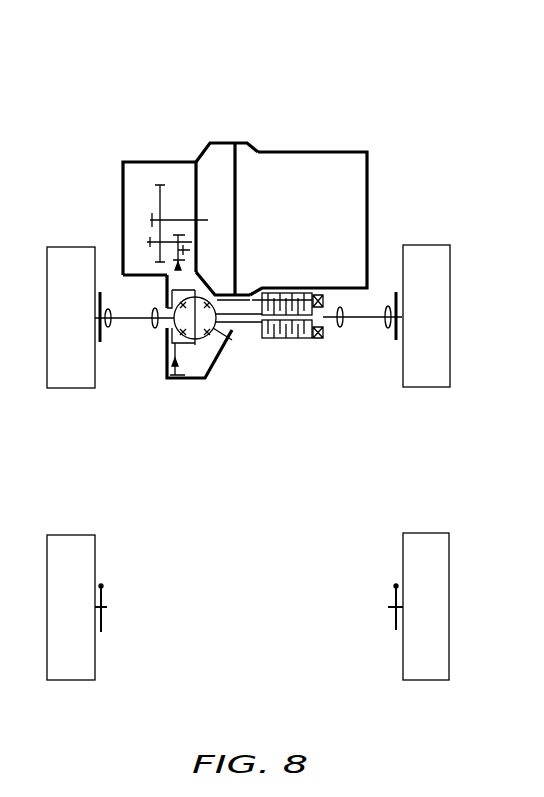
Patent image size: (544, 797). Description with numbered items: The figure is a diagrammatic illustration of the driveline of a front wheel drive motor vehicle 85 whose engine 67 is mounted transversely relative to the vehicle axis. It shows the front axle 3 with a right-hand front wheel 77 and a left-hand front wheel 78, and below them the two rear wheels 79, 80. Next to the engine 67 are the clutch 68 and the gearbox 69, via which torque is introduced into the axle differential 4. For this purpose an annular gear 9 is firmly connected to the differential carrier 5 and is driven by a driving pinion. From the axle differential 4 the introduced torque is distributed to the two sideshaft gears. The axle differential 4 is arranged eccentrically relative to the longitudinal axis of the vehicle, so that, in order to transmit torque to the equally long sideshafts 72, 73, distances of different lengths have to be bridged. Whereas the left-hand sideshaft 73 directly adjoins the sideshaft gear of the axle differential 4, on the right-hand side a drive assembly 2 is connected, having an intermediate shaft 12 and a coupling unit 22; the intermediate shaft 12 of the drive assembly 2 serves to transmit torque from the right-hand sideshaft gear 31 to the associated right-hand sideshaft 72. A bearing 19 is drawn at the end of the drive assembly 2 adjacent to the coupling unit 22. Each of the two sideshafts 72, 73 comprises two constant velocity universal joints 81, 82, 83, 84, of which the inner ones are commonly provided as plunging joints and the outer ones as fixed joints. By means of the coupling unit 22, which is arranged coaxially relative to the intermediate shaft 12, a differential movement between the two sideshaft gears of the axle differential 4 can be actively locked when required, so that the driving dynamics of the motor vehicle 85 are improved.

The drive assembly 2 is at (308, 329).
The front axle 3 is at (463, 305).
The axle differential 4 is at (197, 370).
The differential carrier 5 is at (210, 367).
The annular gear 9 is at (172, 380).
The intermediate shaft 12 is at (253, 293).
The bearing 19 is at (330, 280).
The coupling unit 22 is at (292, 288).
The right-hand sideshaft gear 31 is at (227, 337).
The engine 67 is at (307, 157).
The clutch 68 is at (215, 143).
The gearbox 69 is at (147, 177).
The right-hand sideshaft 72 is at (362, 320).
The left-hand sideshaft 73 is at (128, 330).
The right-hand front wheel 77 is at (433, 258).
The left-hand front wheel 78 is at (58, 265).
The rear wheel 79 is at (435, 578).
The rear wheel 80 is at (63, 560).
The constant velocity universal joint 81 is at (388, 330).
The constant velocity universal joint 82 is at (336, 330).
The constant velocity universal joint 83 is at (152, 330).
The constant velocity universal joint 84 is at (112, 297).
The motor vehicle 85 is at (239, 80).